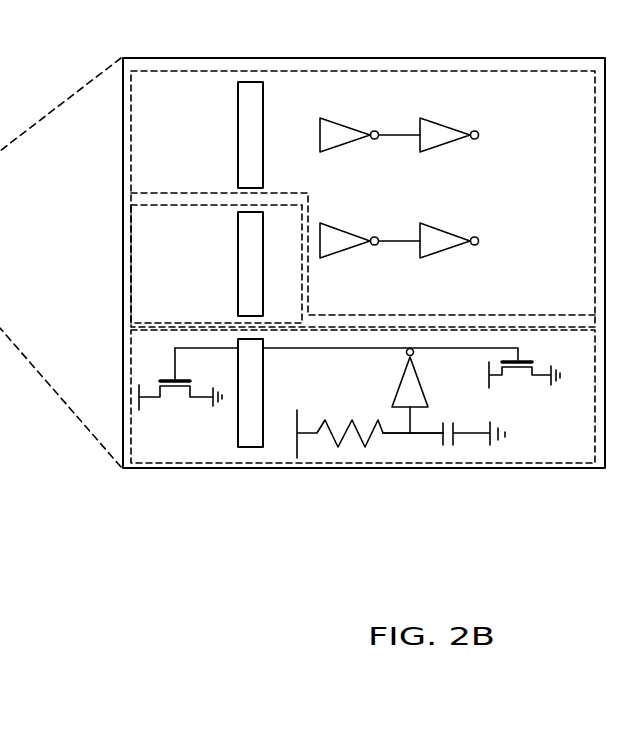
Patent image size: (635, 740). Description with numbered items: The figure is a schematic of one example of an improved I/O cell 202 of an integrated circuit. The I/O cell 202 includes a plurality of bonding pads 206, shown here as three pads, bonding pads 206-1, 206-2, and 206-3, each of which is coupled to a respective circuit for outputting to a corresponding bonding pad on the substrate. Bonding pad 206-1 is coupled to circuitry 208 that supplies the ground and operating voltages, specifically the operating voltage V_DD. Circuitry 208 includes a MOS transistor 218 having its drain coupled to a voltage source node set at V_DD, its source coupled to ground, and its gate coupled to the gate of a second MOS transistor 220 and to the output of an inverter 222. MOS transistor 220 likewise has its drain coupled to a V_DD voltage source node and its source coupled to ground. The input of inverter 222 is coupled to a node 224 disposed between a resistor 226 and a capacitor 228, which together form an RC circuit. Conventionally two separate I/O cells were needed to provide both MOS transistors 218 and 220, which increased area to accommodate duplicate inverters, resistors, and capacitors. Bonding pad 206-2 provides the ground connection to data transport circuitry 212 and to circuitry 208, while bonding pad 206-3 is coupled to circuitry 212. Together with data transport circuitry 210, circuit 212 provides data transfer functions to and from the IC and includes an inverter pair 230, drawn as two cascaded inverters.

The I/O cell 202 is at (545, 58).
The bonding pads 206 is at (0, 87).
The bonding pad 206-1 is at (252, 428).
The bonding pad 206-2 is at (247, 237).
The bonding pad 206-3 is at (252, 92).
The circuitry for supplying ground and operating voltages 208 is at (583, 463).
The data transport circuitry 210 is at (130, 262).
The data transport circuitry 212 is at (427, 71).
The MOS transistor 218 is at (160, 384).
The MOS transistor 220 is at (515, 377).
The inverter 222 is at (400, 384).
The node 224 is at (410, 437).
The resistor 226 is at (362, 446).
The capacitor 228 is at (453, 446).
The inverter pair 230 is at (340, 144).